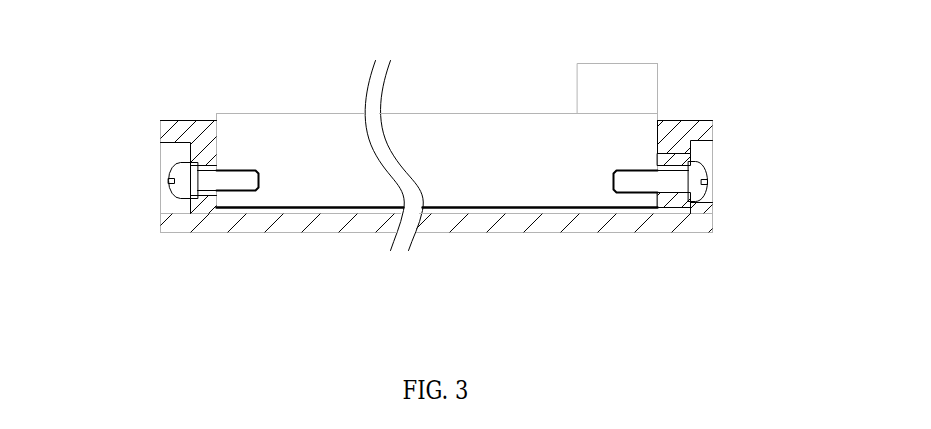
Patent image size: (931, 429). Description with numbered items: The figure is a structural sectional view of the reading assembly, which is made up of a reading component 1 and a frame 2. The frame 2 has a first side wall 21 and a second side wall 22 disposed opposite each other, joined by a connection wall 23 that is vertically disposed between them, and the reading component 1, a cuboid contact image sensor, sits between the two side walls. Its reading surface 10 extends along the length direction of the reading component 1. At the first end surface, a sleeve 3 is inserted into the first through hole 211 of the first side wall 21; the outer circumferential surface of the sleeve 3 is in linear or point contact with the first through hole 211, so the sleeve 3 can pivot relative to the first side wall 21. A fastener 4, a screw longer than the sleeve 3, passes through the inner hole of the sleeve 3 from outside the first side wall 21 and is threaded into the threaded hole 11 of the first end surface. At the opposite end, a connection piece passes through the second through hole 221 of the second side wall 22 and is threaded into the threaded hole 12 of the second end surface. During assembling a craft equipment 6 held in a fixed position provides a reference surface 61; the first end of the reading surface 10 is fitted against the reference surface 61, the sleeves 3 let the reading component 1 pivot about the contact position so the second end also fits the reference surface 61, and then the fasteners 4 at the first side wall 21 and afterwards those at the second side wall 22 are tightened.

The reading component 1 is at (457, 155).
The reading surface 10 is at (290, 113).
The threaded hole 11 is at (613, 185).
The threaded hole 12 is at (258, 195).
The frame 2 is at (436, 191).
The first side wall 21 is at (685, 153).
The first through hole 211 is at (665, 200).
The second side wall 22 is at (190, 142).
The second through hole 221 is at (197, 195).
The connection wall 23 is at (467, 232).
The sleeve 3 is at (680, 150).
The fastener 4 is at (690, 200).
The craft equipment 6 is at (607, 63).
The reference surface 61 is at (633, 113).